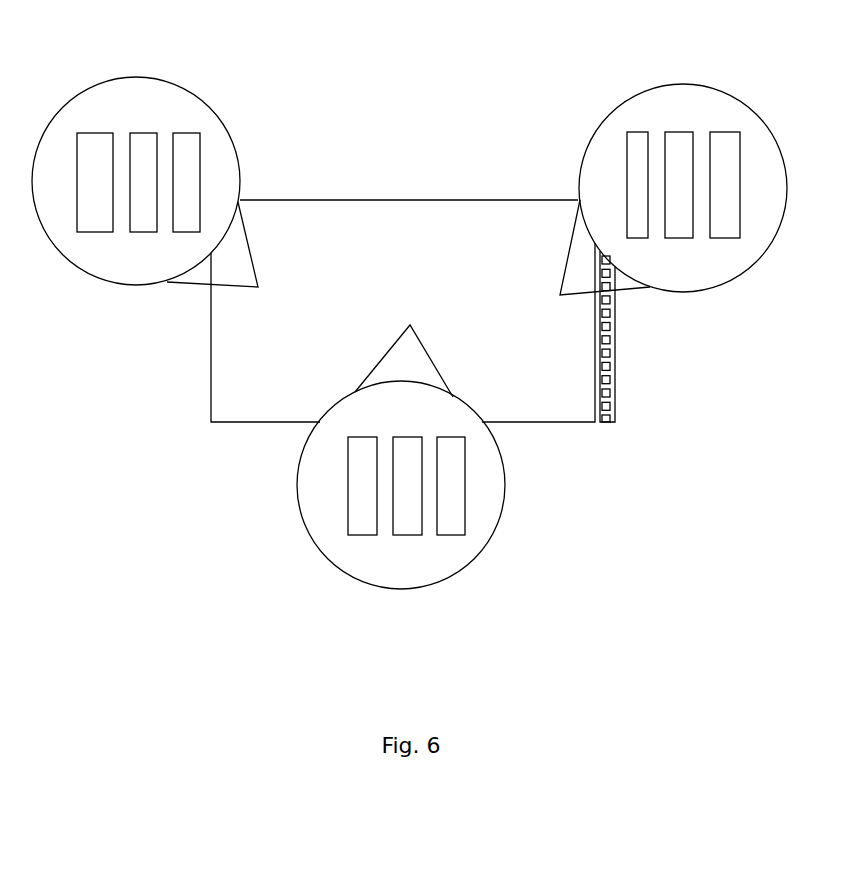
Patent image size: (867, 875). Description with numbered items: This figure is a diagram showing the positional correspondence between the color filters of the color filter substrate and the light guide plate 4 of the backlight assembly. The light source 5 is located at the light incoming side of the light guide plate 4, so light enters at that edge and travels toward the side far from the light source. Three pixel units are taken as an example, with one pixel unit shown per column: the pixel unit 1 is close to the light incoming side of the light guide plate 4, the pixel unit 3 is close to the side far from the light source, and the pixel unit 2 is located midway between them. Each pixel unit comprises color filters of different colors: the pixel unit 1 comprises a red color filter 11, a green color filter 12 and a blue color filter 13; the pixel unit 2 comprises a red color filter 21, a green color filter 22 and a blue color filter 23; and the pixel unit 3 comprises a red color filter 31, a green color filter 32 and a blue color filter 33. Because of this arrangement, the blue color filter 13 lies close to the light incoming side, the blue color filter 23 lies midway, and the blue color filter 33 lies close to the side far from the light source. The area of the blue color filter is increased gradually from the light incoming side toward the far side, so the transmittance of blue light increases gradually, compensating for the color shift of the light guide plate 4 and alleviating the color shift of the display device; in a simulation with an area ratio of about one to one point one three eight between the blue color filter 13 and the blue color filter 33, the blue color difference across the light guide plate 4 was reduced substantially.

The pixel unit 1 is at (673, 156).
The red color filter 11 is at (726, 148).
The green color filter 12 is at (677, 145).
The blue color filter 13 is at (637, 143).
The pixel unit 2 is at (401, 493).
The red color filter 21 is at (447, 528).
The green color filter 22 is at (407, 528).
The blue color filter 23 is at (367, 528).
The pixel unit 3 is at (145, 148).
The red color filter 31 is at (178, 142).
The green color filter 32 is at (142, 138).
The blue color filter 33 is at (102, 138).
The light guide plate 4 is at (380, 210).
The light source 5 is at (610, 408).